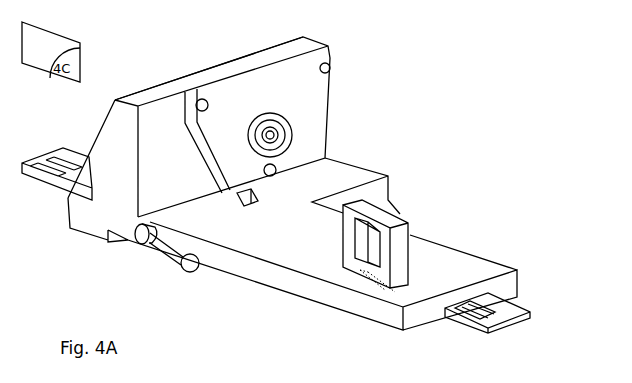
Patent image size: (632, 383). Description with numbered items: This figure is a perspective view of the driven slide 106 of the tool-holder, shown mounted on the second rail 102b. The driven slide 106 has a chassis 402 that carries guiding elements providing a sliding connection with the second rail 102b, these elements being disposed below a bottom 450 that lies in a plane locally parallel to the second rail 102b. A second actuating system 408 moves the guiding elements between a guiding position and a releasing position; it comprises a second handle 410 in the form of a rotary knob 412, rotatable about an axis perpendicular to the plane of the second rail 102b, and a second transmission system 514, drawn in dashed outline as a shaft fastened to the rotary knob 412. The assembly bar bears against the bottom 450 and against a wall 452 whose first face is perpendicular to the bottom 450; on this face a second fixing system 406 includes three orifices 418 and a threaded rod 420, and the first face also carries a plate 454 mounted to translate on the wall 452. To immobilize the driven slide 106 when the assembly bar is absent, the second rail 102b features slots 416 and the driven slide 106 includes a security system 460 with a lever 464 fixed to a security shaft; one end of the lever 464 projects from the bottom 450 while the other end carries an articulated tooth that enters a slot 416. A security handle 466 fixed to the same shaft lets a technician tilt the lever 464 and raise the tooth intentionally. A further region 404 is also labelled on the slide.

The driven slide 106 is at (528, 85).
The second rail 102b is at (527, 318).
The chassis 402 is at (358, 300).
The base portion 404 is at (243, 380).
The second fixing system 406 is at (388, 83).
The second actuating system 408 is at (467, 163).
The second handle 410 is at (502, 190).
The rotary knob 412 is at (393, 247).
The slots 416 is at (60, 147).
The orifices 418 is at (333, 72).
The threaded rod 420 is at (283, 130).
The bottom 450 is at (322, 256).
The wall 452 is at (163, 117).
The plate 454 is at (273, 67).
The security system 460 is at (217, 275).
The lever 464 is at (258, 198).
The security handle 466 is at (138, 245).
The second transmission system 514 is at (412, 318).